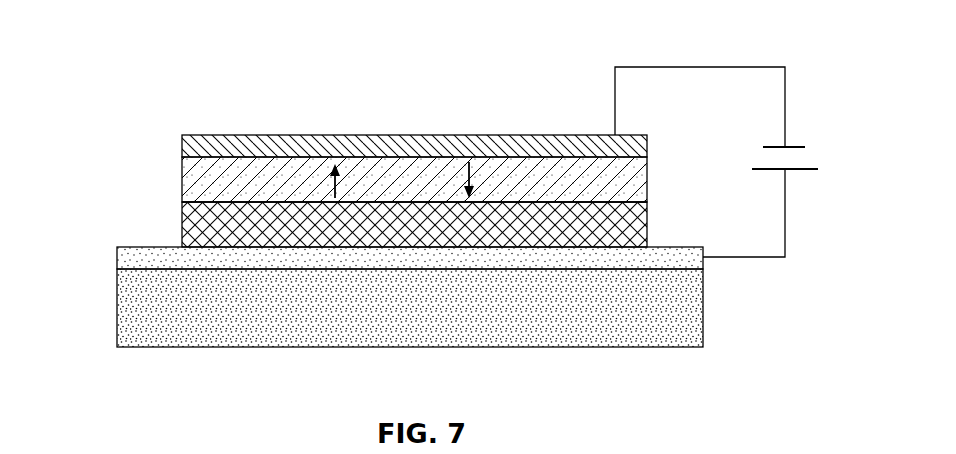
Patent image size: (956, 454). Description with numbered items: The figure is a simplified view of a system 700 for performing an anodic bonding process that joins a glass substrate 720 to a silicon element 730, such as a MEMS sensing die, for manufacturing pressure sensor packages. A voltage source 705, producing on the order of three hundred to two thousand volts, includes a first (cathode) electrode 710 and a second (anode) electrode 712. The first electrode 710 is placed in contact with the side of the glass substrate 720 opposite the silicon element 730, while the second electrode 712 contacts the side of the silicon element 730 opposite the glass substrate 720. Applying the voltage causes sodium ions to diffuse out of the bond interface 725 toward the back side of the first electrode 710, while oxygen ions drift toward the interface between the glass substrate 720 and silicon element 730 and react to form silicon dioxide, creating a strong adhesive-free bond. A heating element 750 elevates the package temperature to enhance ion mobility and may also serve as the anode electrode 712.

The system 700 is at (133, 50).
The voltage source 705 is at (798, 130).
The first (cathode) electrode 710 is at (437, 135).
The second (anode) electrode 712 is at (703, 263).
The glass substrate 720 is at (182, 180).
The bond interface 725 is at (647, 202).
The silicon element 730 is at (182, 225).
The heating element 750 is at (117, 308).